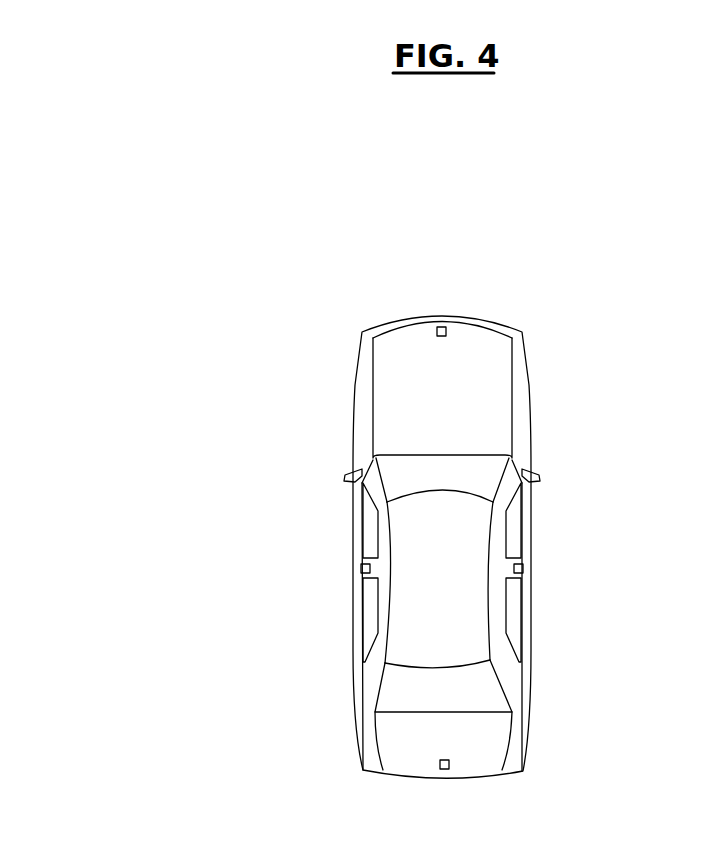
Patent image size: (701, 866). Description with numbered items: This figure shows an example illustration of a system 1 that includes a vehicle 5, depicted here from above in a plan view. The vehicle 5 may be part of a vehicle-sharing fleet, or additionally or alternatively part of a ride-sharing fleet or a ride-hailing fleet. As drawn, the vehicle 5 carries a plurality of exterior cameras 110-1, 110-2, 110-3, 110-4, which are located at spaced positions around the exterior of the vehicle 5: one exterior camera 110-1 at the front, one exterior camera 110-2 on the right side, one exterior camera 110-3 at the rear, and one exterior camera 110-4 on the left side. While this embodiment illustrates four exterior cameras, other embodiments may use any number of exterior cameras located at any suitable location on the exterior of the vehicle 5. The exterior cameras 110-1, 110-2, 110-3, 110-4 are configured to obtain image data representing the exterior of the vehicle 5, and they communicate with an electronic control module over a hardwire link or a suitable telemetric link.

The system 1 is at (110, 299).
The vehicle 5 is at (358, 362).
The exterior camera 110-1 is at (442, 326).
The exterior camera 110-2 is at (523, 568).
The exterior camera 110-3 is at (444, 770).
The exterior camera 110-4 is at (361, 568).